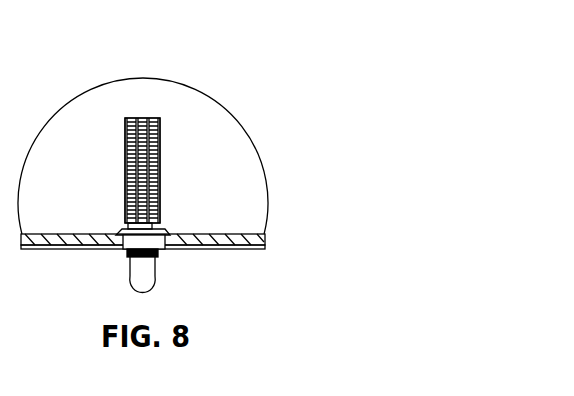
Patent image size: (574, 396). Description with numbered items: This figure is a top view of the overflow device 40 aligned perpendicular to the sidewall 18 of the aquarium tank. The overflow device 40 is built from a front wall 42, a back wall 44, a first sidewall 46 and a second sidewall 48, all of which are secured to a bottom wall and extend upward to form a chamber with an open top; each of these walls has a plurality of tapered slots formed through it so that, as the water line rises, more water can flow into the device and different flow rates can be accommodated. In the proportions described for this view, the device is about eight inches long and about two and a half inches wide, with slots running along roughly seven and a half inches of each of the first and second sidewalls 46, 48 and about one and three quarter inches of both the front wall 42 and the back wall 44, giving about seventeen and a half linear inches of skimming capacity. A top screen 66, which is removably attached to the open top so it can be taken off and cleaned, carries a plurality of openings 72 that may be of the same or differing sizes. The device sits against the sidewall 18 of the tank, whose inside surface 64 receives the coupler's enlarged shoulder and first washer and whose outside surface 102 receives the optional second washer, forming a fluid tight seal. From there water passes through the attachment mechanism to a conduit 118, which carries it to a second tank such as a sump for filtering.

The overflow device 40 is at (213, 60).
The sidewall 18 is at (241, 221).
The inside surface 64 is at (44, 234).
The outside surface 102 is at (58, 249).
The front wall 42 is at (153, 159).
The first sidewall 46 is at (160, 148).
The second sidewall 48 is at (125, 148).
The openings 72 is at (158, 196).
The top screen 66 is at (168, 163).
The back wall 44 is at (160, 224).
The conduit 118 is at (145, 268).